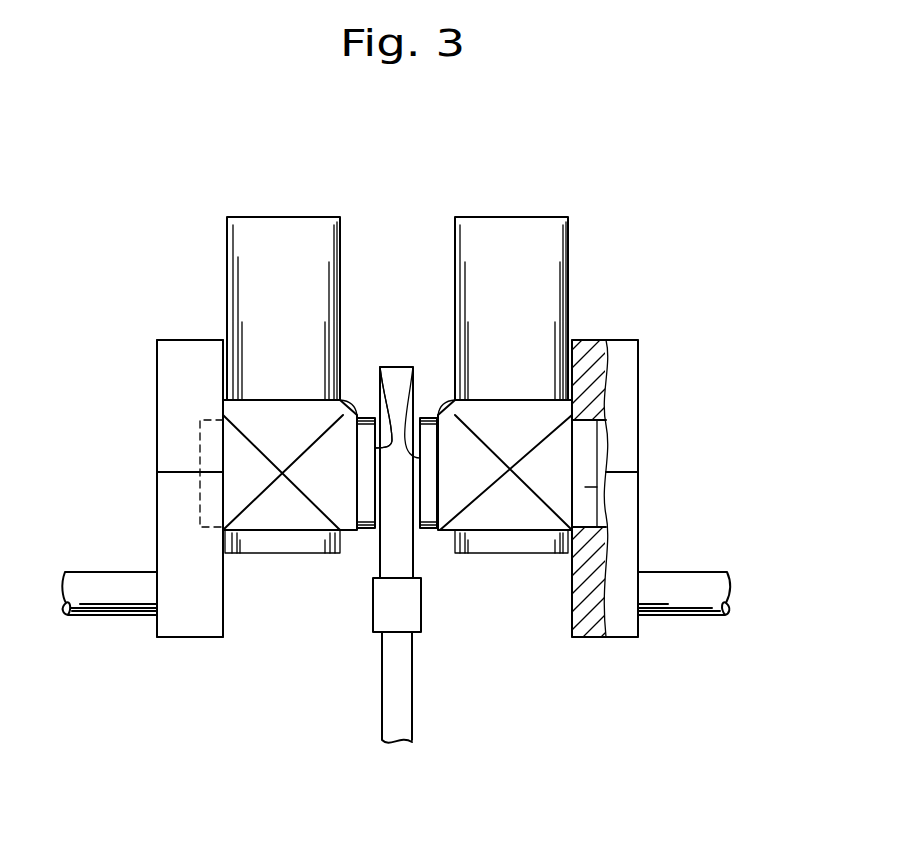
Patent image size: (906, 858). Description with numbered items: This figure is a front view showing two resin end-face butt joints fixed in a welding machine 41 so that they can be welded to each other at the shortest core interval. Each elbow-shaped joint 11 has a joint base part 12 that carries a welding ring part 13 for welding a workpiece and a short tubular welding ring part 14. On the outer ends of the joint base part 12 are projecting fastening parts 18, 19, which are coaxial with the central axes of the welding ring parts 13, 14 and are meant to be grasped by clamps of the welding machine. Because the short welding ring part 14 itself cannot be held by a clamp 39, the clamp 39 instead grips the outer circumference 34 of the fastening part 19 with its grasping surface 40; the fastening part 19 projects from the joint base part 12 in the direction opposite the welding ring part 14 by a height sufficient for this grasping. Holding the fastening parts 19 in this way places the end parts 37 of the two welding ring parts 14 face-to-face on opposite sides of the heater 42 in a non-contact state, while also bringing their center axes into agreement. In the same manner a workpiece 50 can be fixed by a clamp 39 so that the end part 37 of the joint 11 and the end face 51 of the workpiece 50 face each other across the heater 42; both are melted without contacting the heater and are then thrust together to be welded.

The elbow-shaped joint 11 is at (200, 209).
The joint base part 12 is at (272, 518).
The welding ring part 13 is at (285, 232).
The short tubular welding ring part 14 is at (365, 533).
The fastening part 18 is at (300, 545).
The fastening part 19 is at (210, 450).
The outer circumference 34 is at (585, 405).
The end part 37 is at (380, 367).
The clamp 39 is at (167, 365).
The grasping surface 40 is at (605, 440).
The welding machine 41 is at (401, 762).
The heater 42 is at (402, 375).
The workpiece 50 is at (190, 397).
The end face 51 is at (355, 292).